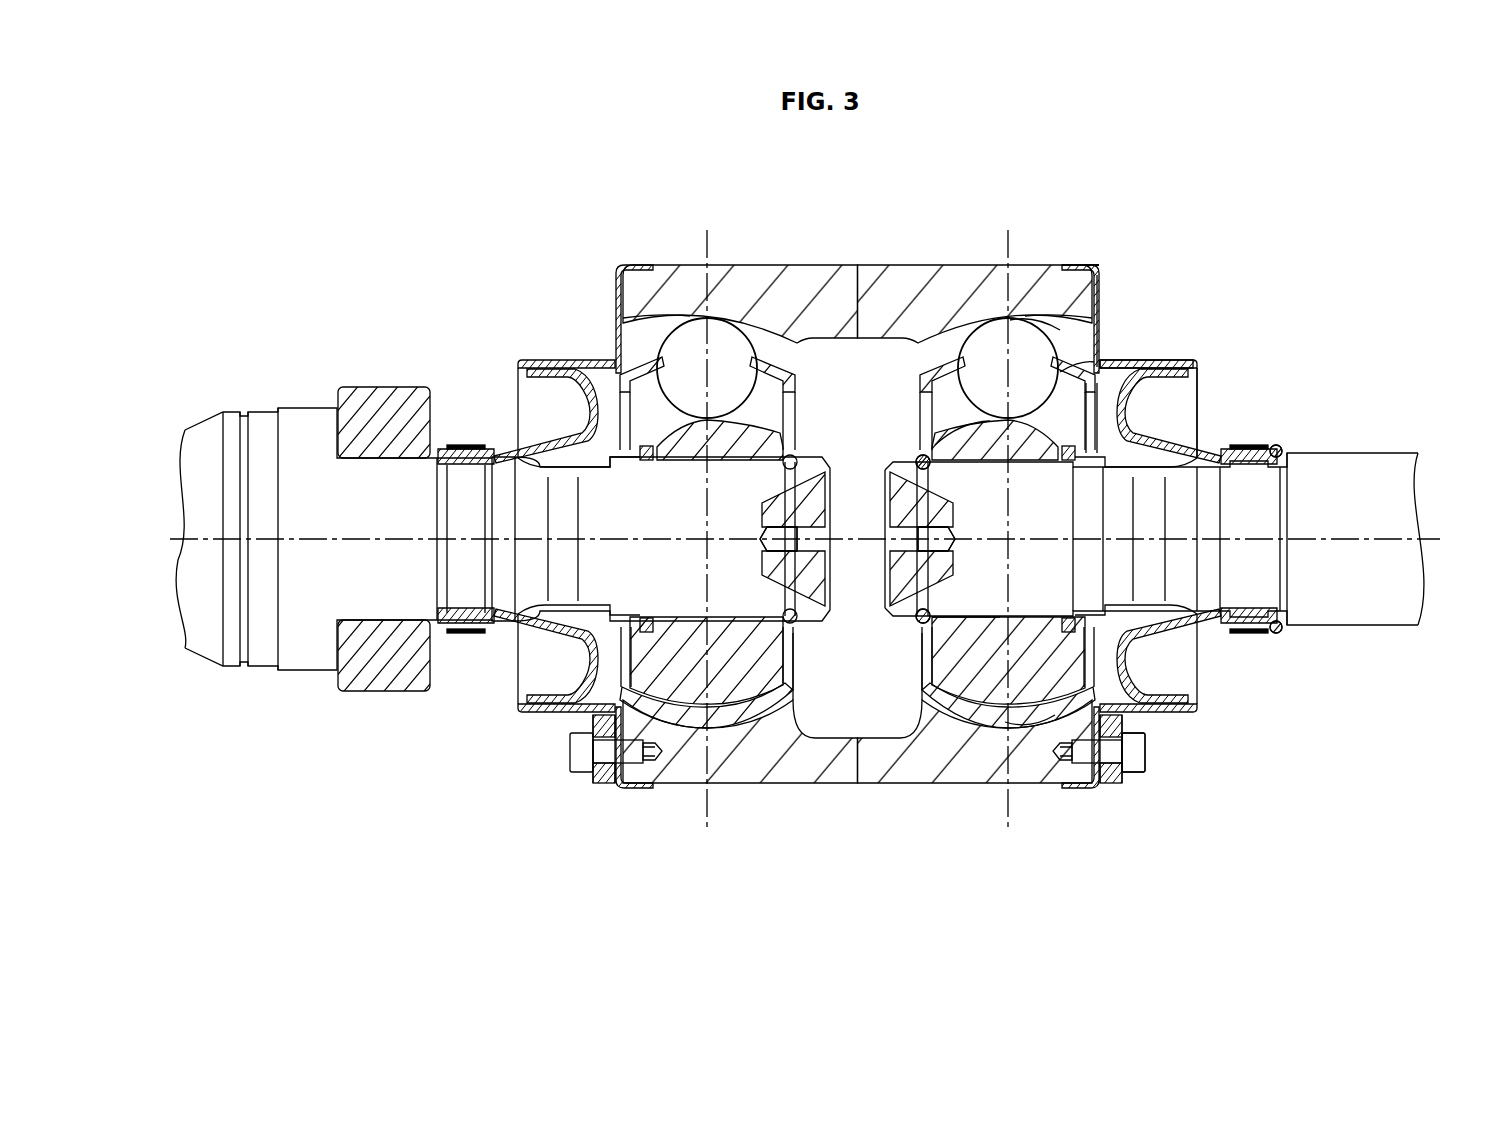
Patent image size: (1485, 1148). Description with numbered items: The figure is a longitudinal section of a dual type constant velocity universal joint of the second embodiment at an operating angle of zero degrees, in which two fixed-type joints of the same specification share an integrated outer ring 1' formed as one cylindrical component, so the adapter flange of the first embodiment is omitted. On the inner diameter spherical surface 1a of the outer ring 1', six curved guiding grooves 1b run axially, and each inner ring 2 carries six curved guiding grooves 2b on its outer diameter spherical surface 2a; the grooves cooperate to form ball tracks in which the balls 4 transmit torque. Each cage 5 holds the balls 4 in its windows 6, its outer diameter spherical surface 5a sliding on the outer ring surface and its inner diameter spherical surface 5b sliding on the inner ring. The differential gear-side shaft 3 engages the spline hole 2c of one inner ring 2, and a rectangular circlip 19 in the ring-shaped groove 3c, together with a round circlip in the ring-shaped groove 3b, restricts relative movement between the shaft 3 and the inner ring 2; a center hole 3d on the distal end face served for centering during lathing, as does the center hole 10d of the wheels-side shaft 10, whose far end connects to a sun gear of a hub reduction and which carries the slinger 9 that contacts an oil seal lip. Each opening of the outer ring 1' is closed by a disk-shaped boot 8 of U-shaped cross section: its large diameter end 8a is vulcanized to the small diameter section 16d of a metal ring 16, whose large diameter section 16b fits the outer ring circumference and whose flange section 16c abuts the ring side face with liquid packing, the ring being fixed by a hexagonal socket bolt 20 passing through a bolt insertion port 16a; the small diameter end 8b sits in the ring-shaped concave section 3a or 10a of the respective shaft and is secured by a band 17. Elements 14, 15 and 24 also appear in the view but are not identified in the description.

The outer ring 1' is at (857, 495).
The inner diameter spherical surface 1a is at (1025, 722).
The curved guiding grooves 1b is at (1048, 318).
The inner ring 2 is at (1130, 420).
The outer diameter spherical surface 2a is at (1090, 365).
The curved guiding grooves 2b is at (958, 425).
The spline hole 2c is at (988, 612).
The differential gear-side shaft 3 is at (1370, 612).
The ring-shaped concave section 3a is at (1242, 634).
The ring-shaped groove 3b is at (918, 458).
The ring-shaped groove 3c is at (1064, 464).
The center hole 3d is at (892, 528).
The balls 4 is at (990, 338).
The cage 5 is at (1075, 362).
The outer diameter spherical surface 5a is at (985, 714).
The inner diameter spherical surface 5b is at (962, 692).
The windows 6 is at (968, 364).
The boot 8 is at (1170, 446).
The large diameter end 8a is at (1196, 382).
The small diameter end 8b is at (1248, 446).
The slinger 9 is at (388, 392).
The wheels-side shaft 10 is at (312, 662).
The ring-shaped concave section 10a is at (464, 634).
The center hole 10d is at (834, 522).
The mounting plate 14 is at (1106, 785).
The mounting plate 15 is at (604, 785).
The metal ring 16 is at (1112, 259).
The bolt insertion ports 16a is at (1145, 752).
The large diameter section 16b is at (1080, 262).
The flange section 16c is at (1103, 300).
The small diameter section 16d is at (1175, 358).
The band 17 is at (1272, 447).
The rectangular circlip 19 is at (1064, 612).
The hexagonal socket bolt 20 is at (1134, 774).
The snap ring 24 is at (918, 621).